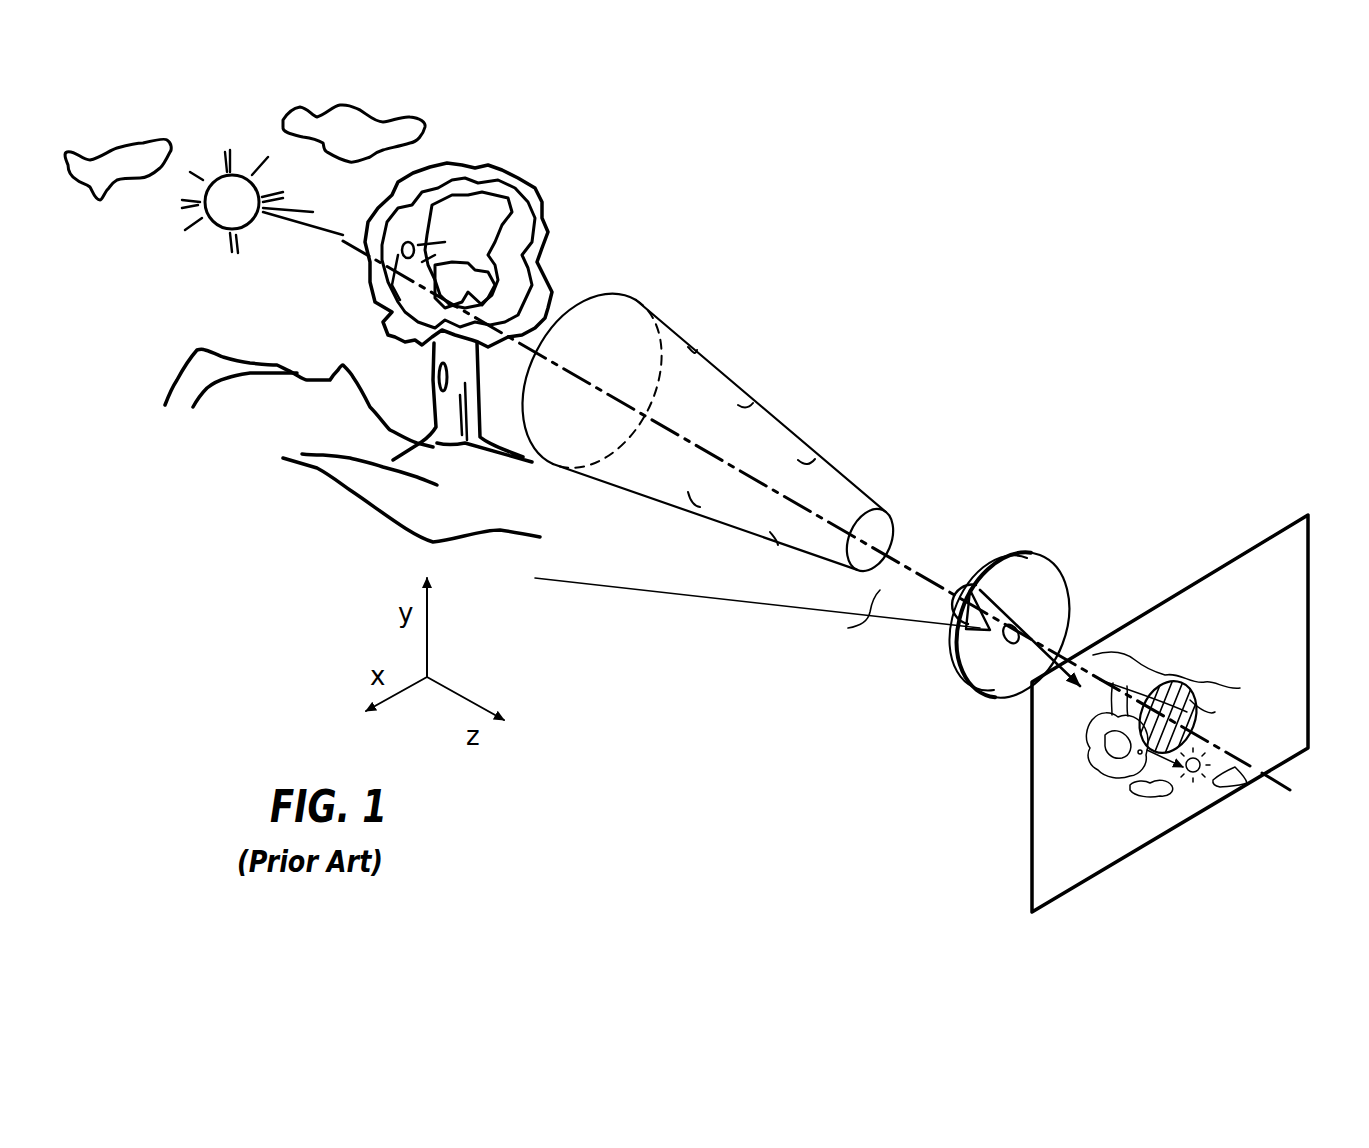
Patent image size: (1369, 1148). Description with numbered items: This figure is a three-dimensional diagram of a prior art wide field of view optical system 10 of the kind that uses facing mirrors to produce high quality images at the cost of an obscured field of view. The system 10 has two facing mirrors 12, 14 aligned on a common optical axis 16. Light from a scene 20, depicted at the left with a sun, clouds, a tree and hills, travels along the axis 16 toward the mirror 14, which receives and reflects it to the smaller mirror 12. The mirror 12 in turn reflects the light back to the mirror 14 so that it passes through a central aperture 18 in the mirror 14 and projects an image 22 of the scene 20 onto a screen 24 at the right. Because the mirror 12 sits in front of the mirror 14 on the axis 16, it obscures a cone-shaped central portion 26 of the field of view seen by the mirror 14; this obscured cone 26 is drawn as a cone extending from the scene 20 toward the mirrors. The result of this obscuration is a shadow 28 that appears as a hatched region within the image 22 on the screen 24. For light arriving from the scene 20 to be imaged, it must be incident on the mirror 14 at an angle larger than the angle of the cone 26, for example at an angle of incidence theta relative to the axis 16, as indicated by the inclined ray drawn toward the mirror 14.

The optical system 10 is at (1067, 292).
The mirror 12 is at (968, 582).
The mirror 14 is at (1036, 552).
The optical axis 16 is at (927, 572).
The central aperture 18 is at (1022, 620).
The scene 20 is at (644, 188).
The image 22 is at (1222, 640).
The screen 24 is at (1030, 848).
The cone-shaped central portion 26 is at (740, 378).
The shadow 28 is at (1230, 692).